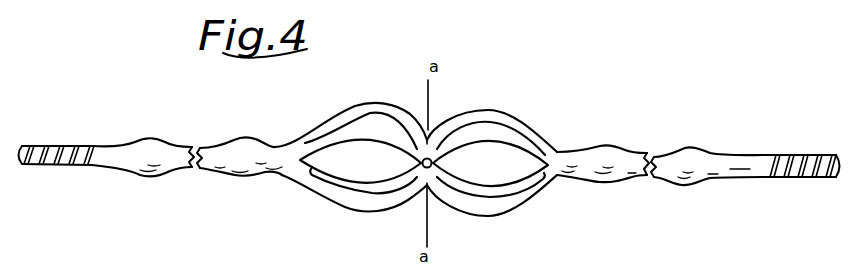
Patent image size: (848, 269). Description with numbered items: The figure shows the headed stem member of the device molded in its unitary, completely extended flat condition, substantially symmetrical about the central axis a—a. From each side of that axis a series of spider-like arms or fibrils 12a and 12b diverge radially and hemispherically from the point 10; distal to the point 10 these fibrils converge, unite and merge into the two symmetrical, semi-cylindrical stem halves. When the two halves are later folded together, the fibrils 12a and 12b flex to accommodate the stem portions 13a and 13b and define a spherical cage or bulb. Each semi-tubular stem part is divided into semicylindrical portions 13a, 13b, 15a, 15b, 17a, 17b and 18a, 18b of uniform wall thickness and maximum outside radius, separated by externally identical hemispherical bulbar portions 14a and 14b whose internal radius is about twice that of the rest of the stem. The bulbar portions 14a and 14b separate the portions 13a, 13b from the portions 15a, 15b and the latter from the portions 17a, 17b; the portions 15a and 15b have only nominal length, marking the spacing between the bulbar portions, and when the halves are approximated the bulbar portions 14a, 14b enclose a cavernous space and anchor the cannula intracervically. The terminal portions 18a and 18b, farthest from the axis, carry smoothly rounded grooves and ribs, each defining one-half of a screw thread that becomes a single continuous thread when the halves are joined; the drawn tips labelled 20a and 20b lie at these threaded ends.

The point 10 is at (432, 152).
The spider-like arm or fibril 12a is at (348, 134).
The spider-like arm or fibril 12b is at (513, 137).
The semicylindrical stem portion 13a is at (292, 173).
The semicylindrical stem portion 13b is at (568, 178).
The hemispherical bulbar stem portion 14a is at (150, 137).
The hemispherical bulbar stem portion 14b is at (608, 145).
The semicylindrical stem portion 15a is at (183, 173).
The semicylindrical stem portion 15b is at (630, 177).
The semicylindrical stem portion 17a is at (123, 173).
The semicylindrical stem portion 17b is at (720, 179).
The terminal screw-threaded stem portion 18a is at (82, 168).
The terminal screw-threaded stem portion 18b is at (790, 179).
The left threaded screw tip 20a is at (26, 168).
The right threaded screw tip 20b is at (837, 170).